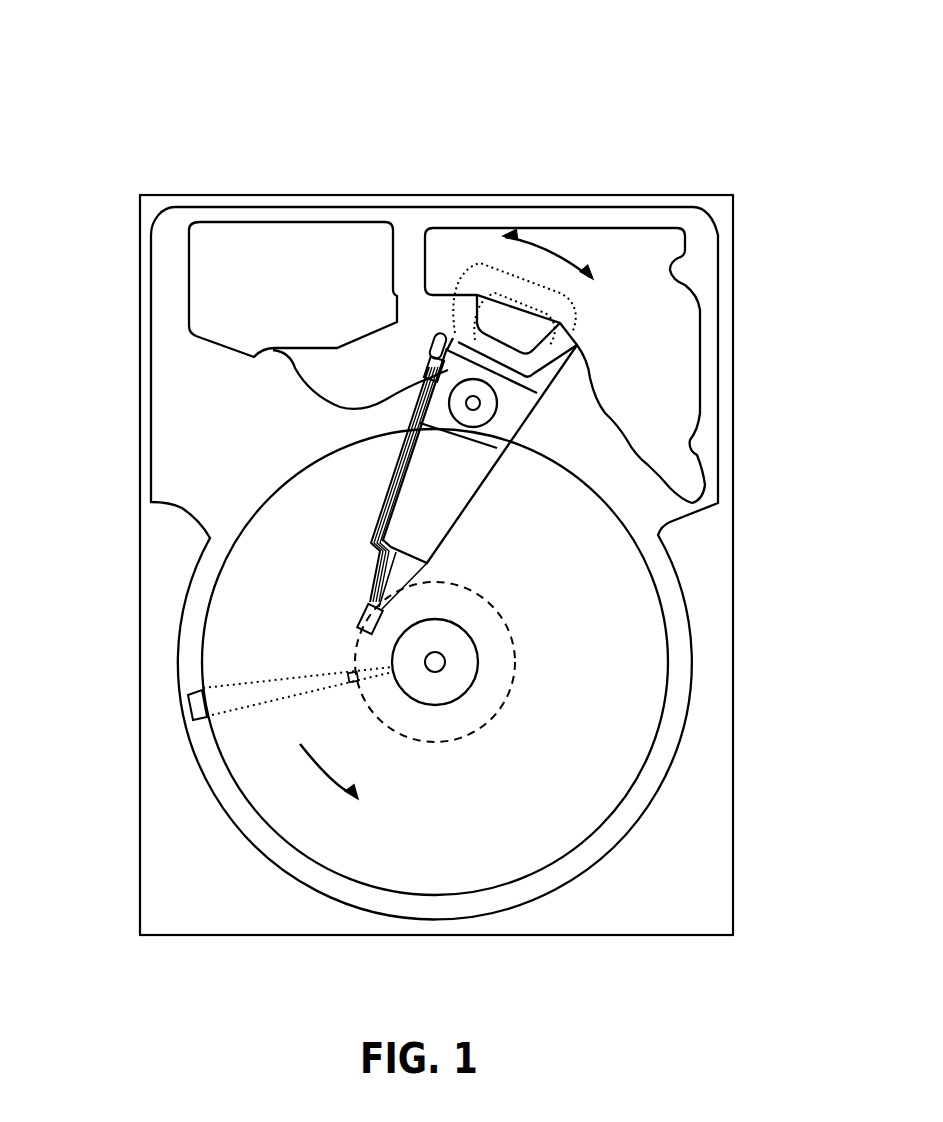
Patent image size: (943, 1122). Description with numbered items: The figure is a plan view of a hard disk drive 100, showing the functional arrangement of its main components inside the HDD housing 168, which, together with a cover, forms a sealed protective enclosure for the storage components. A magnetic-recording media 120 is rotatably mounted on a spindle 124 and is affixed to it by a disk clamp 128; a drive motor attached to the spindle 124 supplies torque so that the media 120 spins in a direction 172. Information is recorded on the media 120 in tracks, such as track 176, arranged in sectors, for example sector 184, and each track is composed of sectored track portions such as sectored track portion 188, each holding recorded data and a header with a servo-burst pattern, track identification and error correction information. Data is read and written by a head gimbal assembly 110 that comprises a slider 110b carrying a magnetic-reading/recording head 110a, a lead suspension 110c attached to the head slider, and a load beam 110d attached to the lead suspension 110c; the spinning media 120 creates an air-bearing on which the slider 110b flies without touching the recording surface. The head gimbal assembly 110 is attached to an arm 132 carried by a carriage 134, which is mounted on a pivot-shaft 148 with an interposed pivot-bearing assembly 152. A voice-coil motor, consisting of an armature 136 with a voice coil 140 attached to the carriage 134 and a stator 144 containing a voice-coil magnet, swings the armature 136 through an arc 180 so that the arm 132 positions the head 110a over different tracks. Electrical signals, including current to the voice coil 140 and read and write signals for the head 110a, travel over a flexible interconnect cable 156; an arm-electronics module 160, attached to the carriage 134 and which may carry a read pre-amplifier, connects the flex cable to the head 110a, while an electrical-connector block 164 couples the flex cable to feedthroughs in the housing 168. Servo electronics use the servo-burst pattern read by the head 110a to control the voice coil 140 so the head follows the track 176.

The hard disk drive 100 is at (70, 76).
The head gimbal assembly 110 is at (226, 502).
The magnetic-reading/recording head 110a is at (350, 637).
The slider 110b is at (357, 612).
The lead suspension 110c is at (380, 553).
The load beam 110d is at (372, 546).
The magnetic-recording media 120 is at (600, 615).
The spindle 124 is at (445, 662).
The disk clamp 128 is at (458, 678).
The arm 132 is at (430, 509).
The carriage 134 is at (489, 428).
The armature 136 is at (453, 340).
The voice coil 140 is at (448, 344).
The stator 144 is at (670, 311).
The pivot-shaft 148 is at (478, 403).
The pivot-bearing assembly 152 is at (485, 413).
The flexible interconnect cable 156 is at (307, 378).
The arm-electronics module 160 is at (432, 371).
The electrical-connector block 164 is at (213, 288).
The HDD housing 168 is at (715, 208).
The direction 172 is at (333, 773).
The track 176 is at (512, 622).
The arc 180 is at (548, 245).
The sector 184 is at (192, 707).
The sectored track portion 188 is at (347, 676).